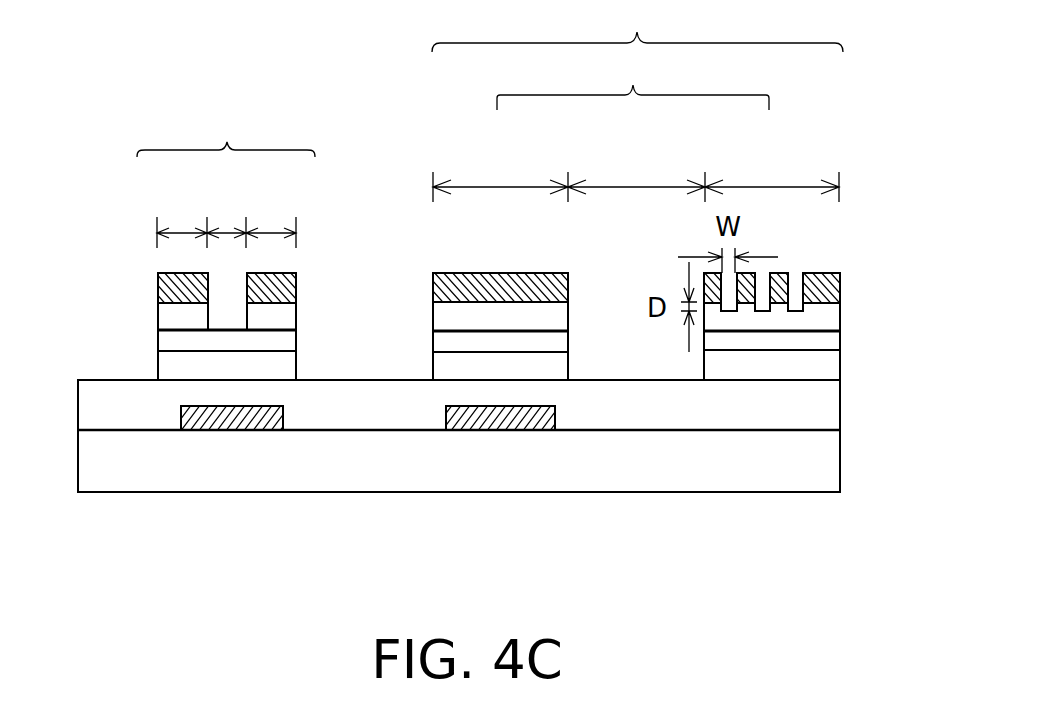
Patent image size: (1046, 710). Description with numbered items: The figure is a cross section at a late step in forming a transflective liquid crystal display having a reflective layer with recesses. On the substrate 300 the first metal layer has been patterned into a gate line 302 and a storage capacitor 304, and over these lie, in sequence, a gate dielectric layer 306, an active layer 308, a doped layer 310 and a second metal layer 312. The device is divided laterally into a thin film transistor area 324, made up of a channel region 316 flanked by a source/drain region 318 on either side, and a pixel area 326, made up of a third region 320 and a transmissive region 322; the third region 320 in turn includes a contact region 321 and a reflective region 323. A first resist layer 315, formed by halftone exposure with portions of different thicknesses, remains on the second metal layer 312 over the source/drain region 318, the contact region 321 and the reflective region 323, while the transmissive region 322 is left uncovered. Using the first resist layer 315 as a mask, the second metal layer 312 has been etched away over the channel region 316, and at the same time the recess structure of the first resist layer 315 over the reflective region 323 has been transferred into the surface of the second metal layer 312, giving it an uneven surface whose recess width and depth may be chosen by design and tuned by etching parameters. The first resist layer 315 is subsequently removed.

The substrate 300 is at (813, 460).
The gate line 302 is at (234, 418).
The storage capacitor 304 is at (505, 418).
The gate dielectric layer 306 is at (813, 402).
The active layer 308 is at (170, 365).
The doped layer 310 is at (170, 340).
The second metal layer 312 is at (170, 310).
The first resist layer 315 is at (160, 282).
The channel region 316 is at (227, 232).
The source/drain region 318 is at (181, 232).
The third region 320 is at (633, 81).
The contact region 321 is at (500, 186).
The transmissive region 322 is at (638, 186).
The reflective region 323 is at (767, 186).
The thin film transistor area 324 is at (226, 131).
The pixel area 326 is at (637, 26).